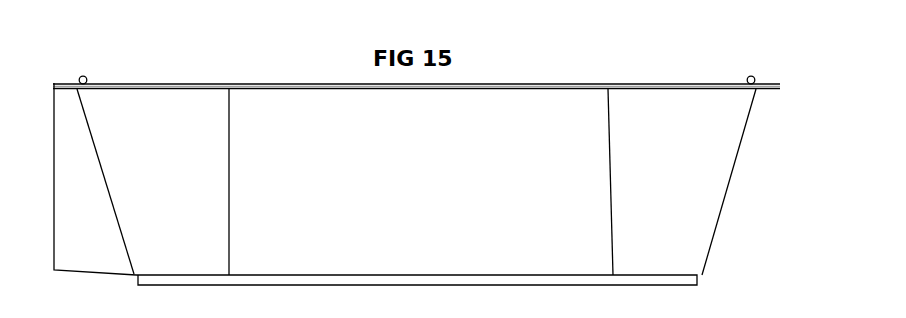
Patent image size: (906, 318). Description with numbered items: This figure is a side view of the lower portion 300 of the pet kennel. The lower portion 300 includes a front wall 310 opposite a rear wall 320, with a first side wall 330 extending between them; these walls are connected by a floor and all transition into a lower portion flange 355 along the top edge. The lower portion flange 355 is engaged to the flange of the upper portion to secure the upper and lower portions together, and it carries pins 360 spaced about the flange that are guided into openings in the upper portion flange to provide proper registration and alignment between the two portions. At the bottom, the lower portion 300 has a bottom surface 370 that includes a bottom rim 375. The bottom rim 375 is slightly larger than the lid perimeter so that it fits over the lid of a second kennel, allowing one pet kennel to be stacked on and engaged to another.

The lower portion 300 is at (418, 150).
The front wall 310 is at (54, 117).
The rear wall 320 is at (724, 197).
The first side wall 330 is at (531, 131).
The lower portion flange 355 is at (771, 81).
The pins 360 is at (88, 78).
The bottom surface 370 is at (608, 89).
The bottom rim 375 is at (229, 89).